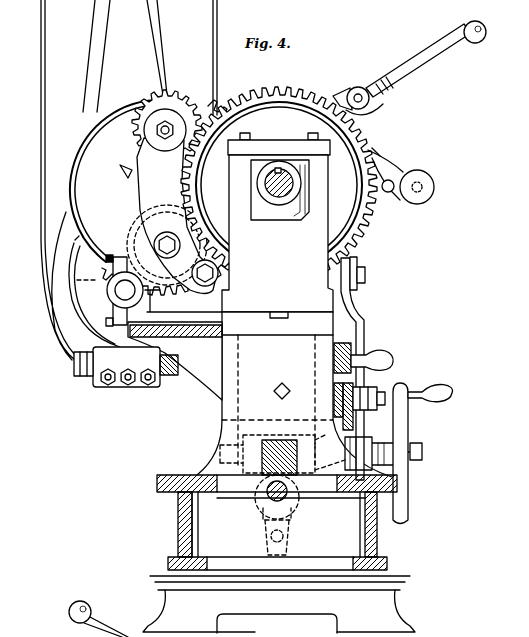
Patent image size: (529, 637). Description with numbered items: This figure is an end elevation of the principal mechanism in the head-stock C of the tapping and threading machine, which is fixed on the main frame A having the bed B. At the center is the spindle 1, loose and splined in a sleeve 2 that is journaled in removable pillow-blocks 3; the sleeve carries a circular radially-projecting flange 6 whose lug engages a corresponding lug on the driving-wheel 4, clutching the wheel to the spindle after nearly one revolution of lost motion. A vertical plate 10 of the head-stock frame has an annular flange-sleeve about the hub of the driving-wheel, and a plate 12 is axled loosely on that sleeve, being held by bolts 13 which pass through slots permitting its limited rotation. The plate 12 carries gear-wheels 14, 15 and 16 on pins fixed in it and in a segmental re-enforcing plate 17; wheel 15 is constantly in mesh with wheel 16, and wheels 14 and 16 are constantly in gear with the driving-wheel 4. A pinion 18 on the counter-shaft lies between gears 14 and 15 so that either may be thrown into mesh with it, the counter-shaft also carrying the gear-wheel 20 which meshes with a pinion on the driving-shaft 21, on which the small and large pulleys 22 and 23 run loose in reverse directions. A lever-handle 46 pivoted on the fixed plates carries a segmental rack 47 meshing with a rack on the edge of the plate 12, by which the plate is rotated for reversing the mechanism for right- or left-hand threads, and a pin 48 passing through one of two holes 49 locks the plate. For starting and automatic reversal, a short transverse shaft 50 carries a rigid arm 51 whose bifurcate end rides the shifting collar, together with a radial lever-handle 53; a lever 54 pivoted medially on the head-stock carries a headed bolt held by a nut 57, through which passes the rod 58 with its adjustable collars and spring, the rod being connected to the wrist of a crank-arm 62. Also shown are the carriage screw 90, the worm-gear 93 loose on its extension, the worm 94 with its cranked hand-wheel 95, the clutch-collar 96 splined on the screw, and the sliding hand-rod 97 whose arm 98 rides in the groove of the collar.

The spindle 1 is at (287, 194).
The sleeve 2 is at (266, 200).
The pillow-blocks 3 is at (306, 181).
The driving-wheel 4 is at (279, 175).
The flange 6 is at (252, 128).
The vertical plate 10 is at (400, 156).
The plate 12 is at (381, 156).
The bolts 13 is at (388, 194).
The gear-wheel 14 is at (147, 108).
The gear-wheel 15 is at (167, 245).
The gear-wheel 16 is at (224, 297).
The segmental re-enforcing plate 17 is at (177, 201).
The pinion 18 is at (124, 170).
The gear-wheel 20 is at (78, 150).
The driving-shaft 21 is at (118, 292).
The small pulley 22 is at (88, 290).
The large pulley 23 is at (55, 270).
The lever-handle 46 is at (418, 68).
The segmental rack 47 is at (374, 101).
The pin 48 is at (435, 187).
The hole 49 is at (424, 176).
The transverse shaft 50 is at (76, 362).
The rigid arm 51 is at (123, 360).
The lever-handle 53 is at (354, 357).
The lever 54 is at (357, 330).
The nut 57 is at (396, 392).
The rod 58 is at (334, 395).
The crank-arm 62 is at (326, 422).
The screw 90 is at (290, 495).
The worm-gear 93 is at (256, 488).
The worm 94 is at (282, 448).
The cranked hand-wheel 95 is at (406, 423).
The clutch-collar 96 is at (265, 505).
The sliding hand-rod 97 is at (270, 535).
The arm 98 is at (290, 516).
The main frame A is at (372, 556).
The bed B is at (176, 475).
The head-stock C is at (294, 305).